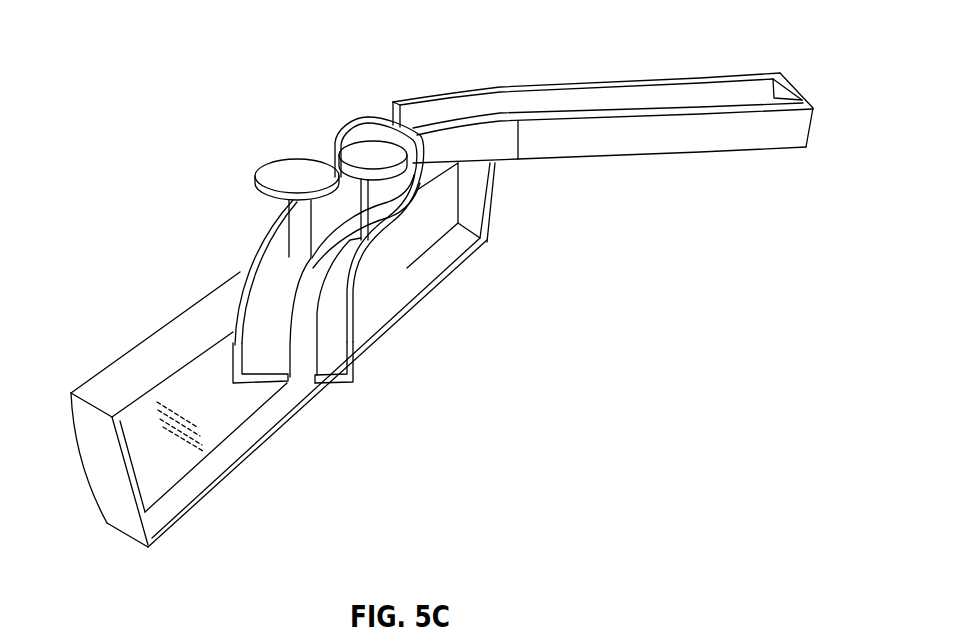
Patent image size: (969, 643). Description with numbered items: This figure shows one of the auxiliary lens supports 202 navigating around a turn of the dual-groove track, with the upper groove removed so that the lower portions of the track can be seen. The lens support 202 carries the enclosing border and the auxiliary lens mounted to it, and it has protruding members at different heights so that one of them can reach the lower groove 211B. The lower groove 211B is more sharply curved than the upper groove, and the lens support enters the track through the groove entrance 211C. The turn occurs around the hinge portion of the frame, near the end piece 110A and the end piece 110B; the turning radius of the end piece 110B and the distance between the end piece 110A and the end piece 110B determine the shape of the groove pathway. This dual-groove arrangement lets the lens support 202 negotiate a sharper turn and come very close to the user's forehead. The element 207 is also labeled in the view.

The auxiliary lens support 202 is at (118, 201).
The frame 207 is at (138, 367).
The lower groove 211B is at (676, 99).
The groove entrance 211C is at (293, 343).
The end piece 110A is at (298, 175).
The end piece 110B is at (372, 158).